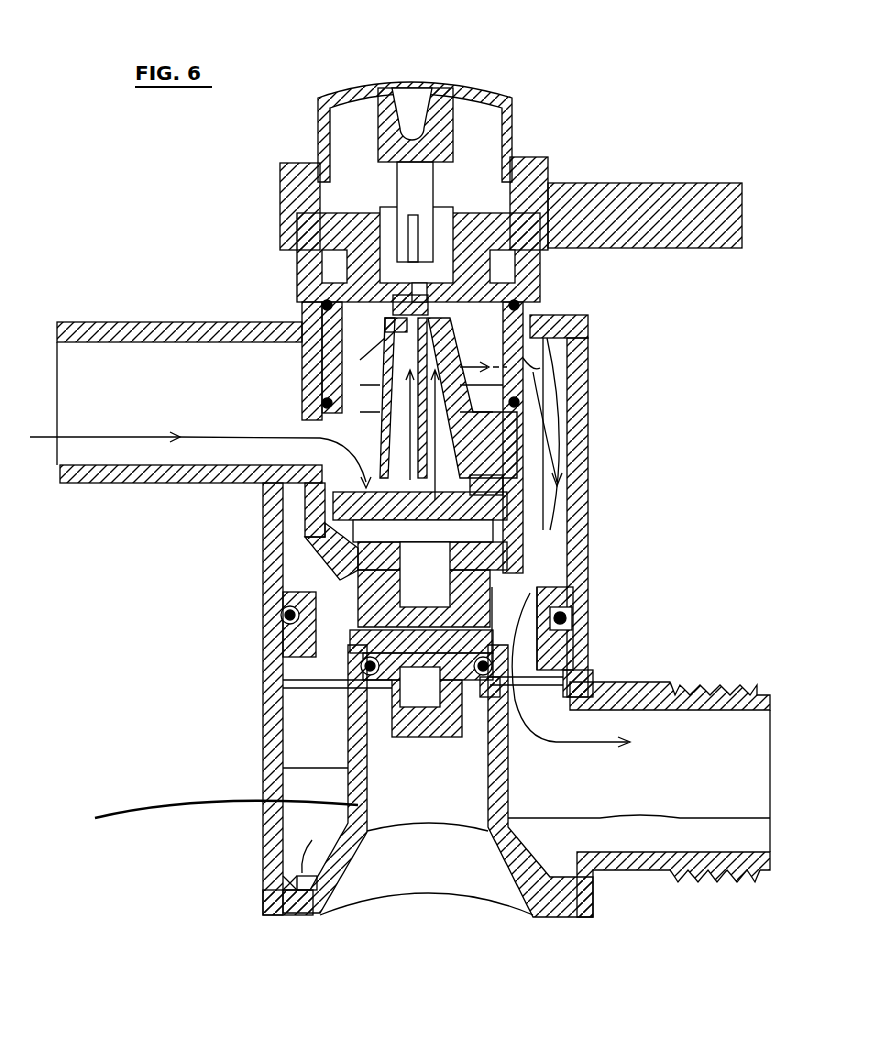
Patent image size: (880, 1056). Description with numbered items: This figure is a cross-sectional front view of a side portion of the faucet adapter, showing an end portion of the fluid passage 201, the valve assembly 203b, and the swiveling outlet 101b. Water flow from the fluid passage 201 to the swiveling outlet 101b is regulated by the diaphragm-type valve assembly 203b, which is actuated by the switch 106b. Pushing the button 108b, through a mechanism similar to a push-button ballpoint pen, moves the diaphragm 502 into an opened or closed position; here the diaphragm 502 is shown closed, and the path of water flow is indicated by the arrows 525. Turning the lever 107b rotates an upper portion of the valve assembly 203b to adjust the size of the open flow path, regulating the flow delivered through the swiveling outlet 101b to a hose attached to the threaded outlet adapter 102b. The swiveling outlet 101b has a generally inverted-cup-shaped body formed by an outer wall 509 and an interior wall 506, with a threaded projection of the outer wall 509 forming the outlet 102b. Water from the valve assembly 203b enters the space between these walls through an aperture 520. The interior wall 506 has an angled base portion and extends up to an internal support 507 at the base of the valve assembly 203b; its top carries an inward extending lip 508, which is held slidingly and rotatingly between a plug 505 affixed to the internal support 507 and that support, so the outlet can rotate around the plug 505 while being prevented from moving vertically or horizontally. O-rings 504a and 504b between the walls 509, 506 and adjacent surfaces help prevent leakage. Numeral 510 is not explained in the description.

The switch 106b is at (516, 92).
The button 108b is at (432, 98).
The lever 107b is at (643, 215).
The valve assembly 203b is at (600, 437).
The diaphragm 502 is at (470, 512).
The arrows 525 is at (240, 443).
The fluid passage 201 is at (82, 473).
The internal support 507 is at (390, 633).
The aperture 520 is at (535, 593).
The plug 505 is at (400, 737).
The inward extending lip 508 is at (385, 695).
The O-ring 504a is at (572, 620).
The O-ring 504b is at (588, 662).
The outer wall 509 is at (575, 682).
The swiveling outlet 101b is at (245, 818).
The foot 510 is at (263, 915).
The interior wall 506 is at (805, 806).
The threaded outlet adapter 102b is at (737, 880).